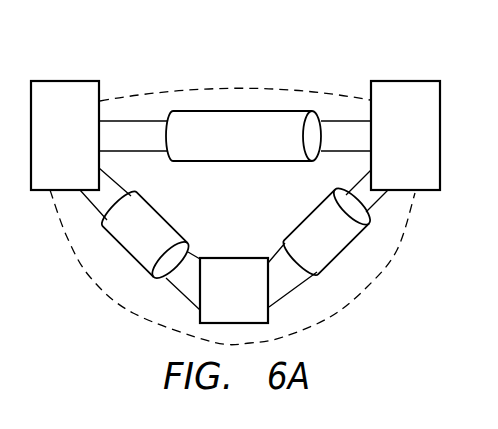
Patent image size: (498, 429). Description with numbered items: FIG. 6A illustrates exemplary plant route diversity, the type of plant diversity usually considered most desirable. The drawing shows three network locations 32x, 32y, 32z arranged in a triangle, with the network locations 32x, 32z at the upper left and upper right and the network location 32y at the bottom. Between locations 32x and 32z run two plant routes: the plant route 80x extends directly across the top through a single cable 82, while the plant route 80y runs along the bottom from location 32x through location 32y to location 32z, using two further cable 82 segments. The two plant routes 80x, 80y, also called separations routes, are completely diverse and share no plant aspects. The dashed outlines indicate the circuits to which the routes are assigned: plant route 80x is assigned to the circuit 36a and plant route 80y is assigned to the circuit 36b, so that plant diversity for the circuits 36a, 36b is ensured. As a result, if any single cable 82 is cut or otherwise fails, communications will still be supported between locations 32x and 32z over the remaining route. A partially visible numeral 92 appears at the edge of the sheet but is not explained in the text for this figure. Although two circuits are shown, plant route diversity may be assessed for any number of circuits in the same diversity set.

The network location 32x is at (83, 148).
The network location 32y is at (251, 303).
The network location 32z is at (422, 148).
The cable 82 is at (247, 147).
The circuit 36a is at (172, 88).
The circuit 36b is at (92, 278).
The plant route 80x is at (235, 59).
The plant route 80y is at (232, 278).
The adjacent element 92 is at (490, 54).